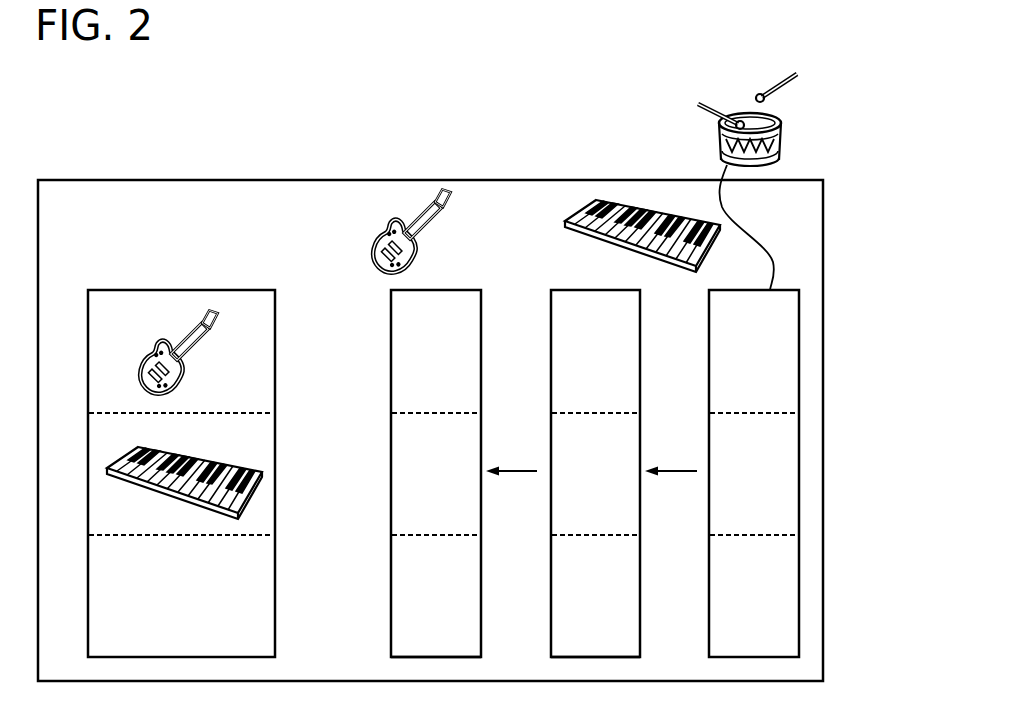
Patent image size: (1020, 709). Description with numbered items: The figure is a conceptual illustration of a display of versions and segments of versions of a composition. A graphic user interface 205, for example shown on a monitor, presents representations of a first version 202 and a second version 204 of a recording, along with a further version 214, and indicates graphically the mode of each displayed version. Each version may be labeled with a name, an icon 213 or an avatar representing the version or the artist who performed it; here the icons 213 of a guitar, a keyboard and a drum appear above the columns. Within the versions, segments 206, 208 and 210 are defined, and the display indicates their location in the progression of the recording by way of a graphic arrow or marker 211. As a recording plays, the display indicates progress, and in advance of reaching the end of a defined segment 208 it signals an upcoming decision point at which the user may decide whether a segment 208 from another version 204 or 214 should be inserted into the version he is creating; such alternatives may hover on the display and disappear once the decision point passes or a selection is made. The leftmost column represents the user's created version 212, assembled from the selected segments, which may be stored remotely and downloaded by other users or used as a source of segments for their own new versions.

The first version 202 is at (478, 290).
The second version 204 is at (562, 290).
The graphic user interface 205 is at (214, 180).
The segment 206 is at (460, 362).
The segment 208 is at (460, 486).
The segment 210 is at (460, 609).
The graphic arrow or marker 211 is at (597, 459).
The user's created version 212 is at (137, 290).
The icon 213 is at (402, 226).
The version 214 is at (800, 369).